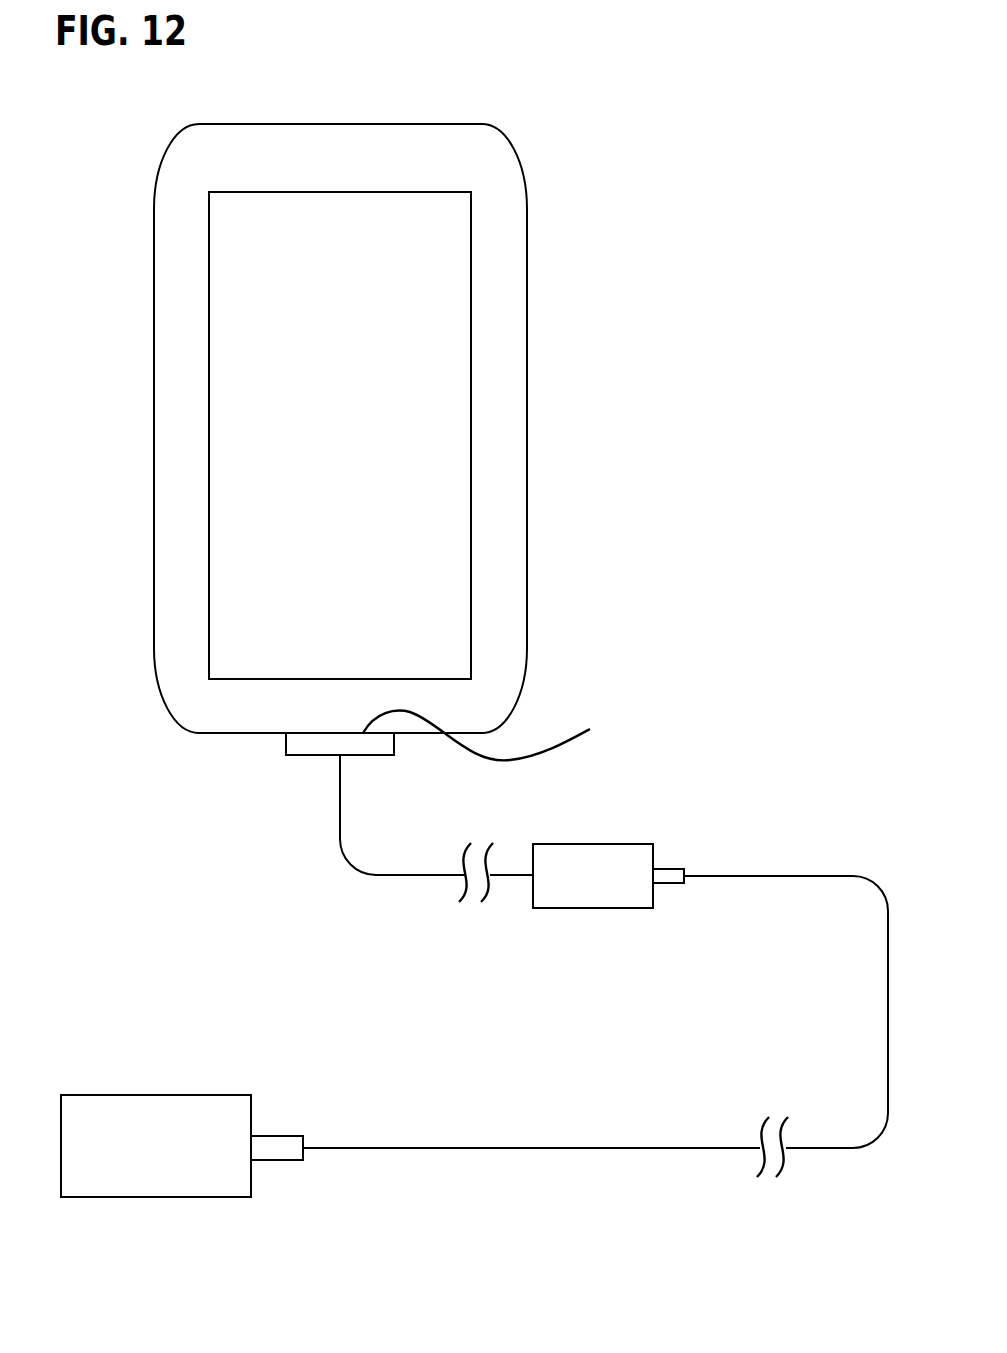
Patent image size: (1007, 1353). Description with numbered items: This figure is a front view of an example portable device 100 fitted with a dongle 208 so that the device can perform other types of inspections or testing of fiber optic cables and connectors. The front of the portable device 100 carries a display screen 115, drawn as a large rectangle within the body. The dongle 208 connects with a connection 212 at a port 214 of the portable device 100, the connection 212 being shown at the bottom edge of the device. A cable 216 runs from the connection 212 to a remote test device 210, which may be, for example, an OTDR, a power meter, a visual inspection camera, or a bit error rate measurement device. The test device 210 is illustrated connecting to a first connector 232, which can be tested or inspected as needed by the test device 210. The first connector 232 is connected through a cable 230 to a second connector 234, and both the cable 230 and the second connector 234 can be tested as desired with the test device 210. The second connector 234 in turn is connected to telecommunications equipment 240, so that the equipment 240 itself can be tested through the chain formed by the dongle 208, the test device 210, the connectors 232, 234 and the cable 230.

The portable device 100 is at (522, 144).
The display screen 115 is at (383, 423).
The dongle 208 is at (339, 884).
The remote test device 210 is at (592, 908).
The connection 212 is at (367, 755).
The port 214 is at (492, 731).
The cable 216 is at (423, 875).
The cable 230 is at (542, 1148).
The first connector 232 is at (667, 883).
The second connector 234 is at (278, 1153).
The telecommunications equipment 240 is at (128, 1197).